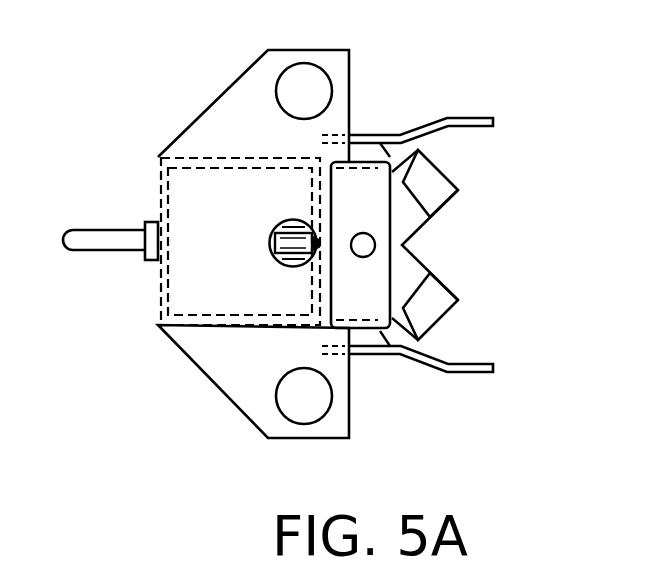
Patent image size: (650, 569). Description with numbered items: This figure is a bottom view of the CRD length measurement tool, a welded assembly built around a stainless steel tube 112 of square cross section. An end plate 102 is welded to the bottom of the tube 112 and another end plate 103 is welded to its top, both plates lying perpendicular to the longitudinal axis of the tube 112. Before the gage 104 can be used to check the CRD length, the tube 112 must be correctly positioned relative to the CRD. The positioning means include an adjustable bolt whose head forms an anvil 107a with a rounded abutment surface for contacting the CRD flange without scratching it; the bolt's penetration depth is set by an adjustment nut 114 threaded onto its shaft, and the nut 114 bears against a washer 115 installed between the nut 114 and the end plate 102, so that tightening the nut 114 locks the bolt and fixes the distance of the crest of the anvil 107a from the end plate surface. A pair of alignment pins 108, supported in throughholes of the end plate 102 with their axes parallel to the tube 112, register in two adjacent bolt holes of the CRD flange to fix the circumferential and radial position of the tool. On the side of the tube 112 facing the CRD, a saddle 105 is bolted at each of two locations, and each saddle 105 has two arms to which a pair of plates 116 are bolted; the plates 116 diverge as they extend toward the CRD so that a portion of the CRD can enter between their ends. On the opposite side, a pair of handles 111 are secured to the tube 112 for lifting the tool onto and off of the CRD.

The end plate 102 is at (203, 375).
The end plate 103 is at (358, 182).
The gage 104 is at (423, 263).
The saddle 105 is at (365, 337).
The anvil 107a is at (270, 243).
The alignment pin 108 is at (277, 402).
The handle 111 is at (92, 229).
The tube 112 is at (158, 294).
The adjustment nut 114 is at (293, 267).
The washer 115 is at (290, 220).
The plate 116 is at (473, 118).